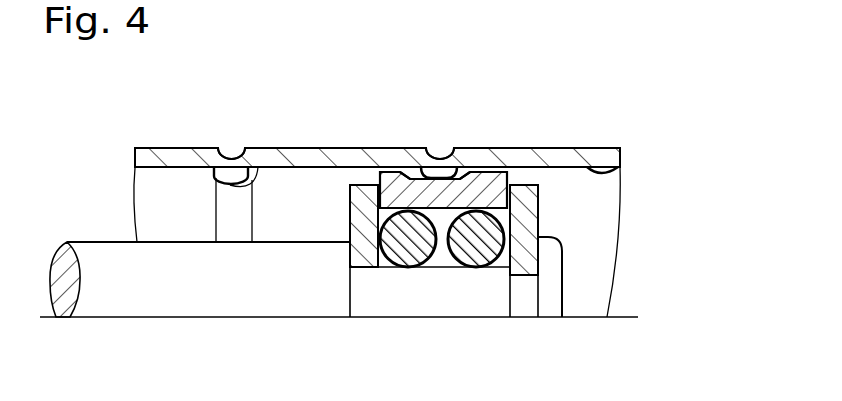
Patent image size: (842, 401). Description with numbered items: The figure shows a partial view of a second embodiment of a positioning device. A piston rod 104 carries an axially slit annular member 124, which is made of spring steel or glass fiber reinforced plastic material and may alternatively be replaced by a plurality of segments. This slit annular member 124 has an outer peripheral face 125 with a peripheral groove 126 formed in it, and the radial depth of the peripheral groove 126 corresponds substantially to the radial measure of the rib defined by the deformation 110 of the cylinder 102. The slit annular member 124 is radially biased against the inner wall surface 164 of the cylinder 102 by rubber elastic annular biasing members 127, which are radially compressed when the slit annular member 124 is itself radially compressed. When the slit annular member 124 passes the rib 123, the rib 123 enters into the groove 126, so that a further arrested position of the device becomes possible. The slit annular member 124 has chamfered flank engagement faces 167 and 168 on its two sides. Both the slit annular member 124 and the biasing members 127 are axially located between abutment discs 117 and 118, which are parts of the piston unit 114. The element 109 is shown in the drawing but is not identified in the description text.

The cylinder 102 is at (188, 148).
The piston rod 104 is at (93, 258).
The plate layer 109 is at (322, 158).
The deformation 110 is at (441, 158).
The piston unit 114 is at (550, 230).
The abutment disc 117 is at (524, 192).
The abutment disc 118 is at (350, 208).
The rib 123 is at (247, 193).
The slit annular member 124 is at (470, 172).
The outer peripheral face 125 is at (418, 173).
The peripheral groove 126 is at (438, 173).
The rubber elastic annular biasing members 127 is at (480, 258).
The inner wall surface 164 is at (620, 168).
The chamfered flank engagement face 167 is at (508, 166).
The chamfered flank engagement face 168 is at (378, 166).